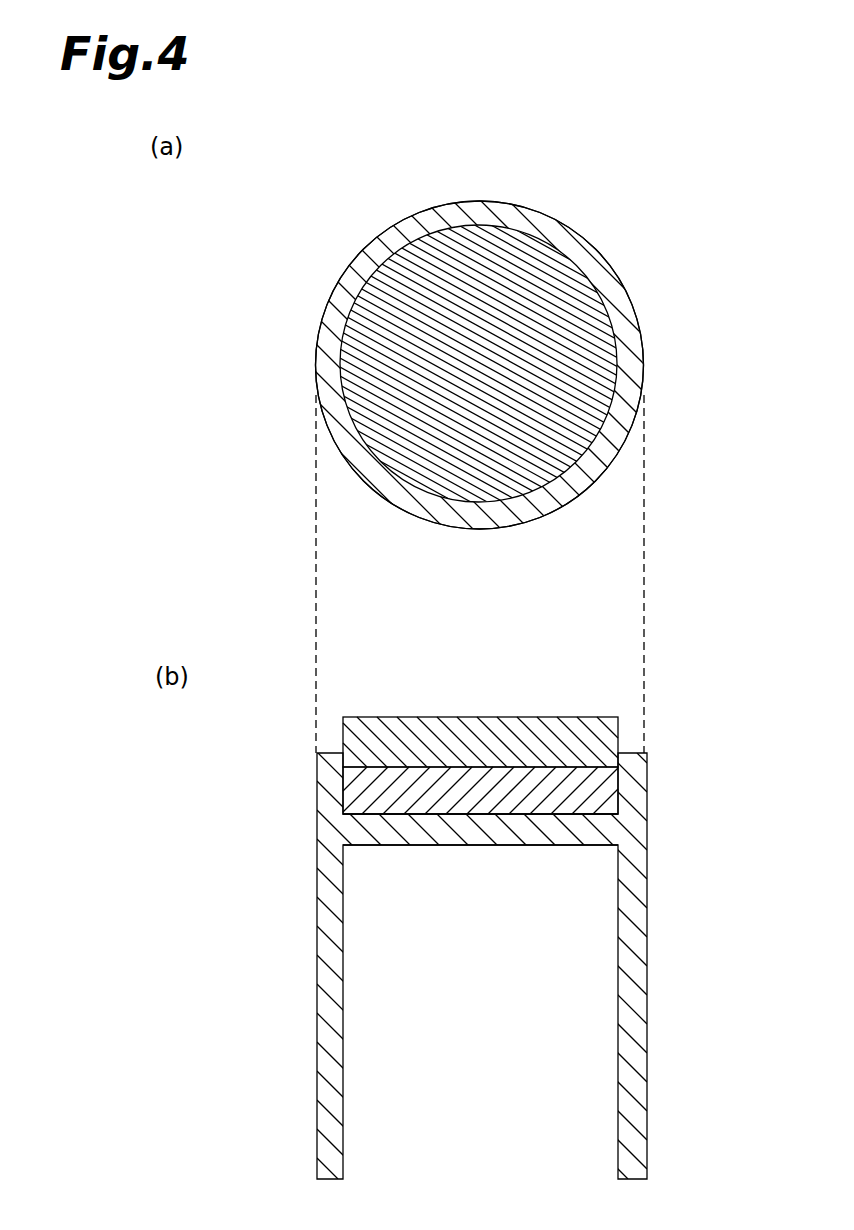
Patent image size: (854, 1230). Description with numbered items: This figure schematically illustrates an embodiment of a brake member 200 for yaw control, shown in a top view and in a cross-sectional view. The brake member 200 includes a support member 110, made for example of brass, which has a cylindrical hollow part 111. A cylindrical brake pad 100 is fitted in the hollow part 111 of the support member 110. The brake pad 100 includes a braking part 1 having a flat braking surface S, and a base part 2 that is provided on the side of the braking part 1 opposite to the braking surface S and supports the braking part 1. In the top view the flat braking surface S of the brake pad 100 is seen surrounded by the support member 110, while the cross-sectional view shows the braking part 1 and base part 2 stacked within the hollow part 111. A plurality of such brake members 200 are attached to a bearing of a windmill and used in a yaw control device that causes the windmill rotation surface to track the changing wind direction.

The brake member 200 is at (608, 205).
The support member 110 is at (623, 312).
The braking surface S is at (580, 355).
The brake pad 100 is at (564, 765).
The braking part 1 is at (605, 735).
The base part 2 is at (605, 790).
The cylindrical hollow part 111 is at (380, 812).